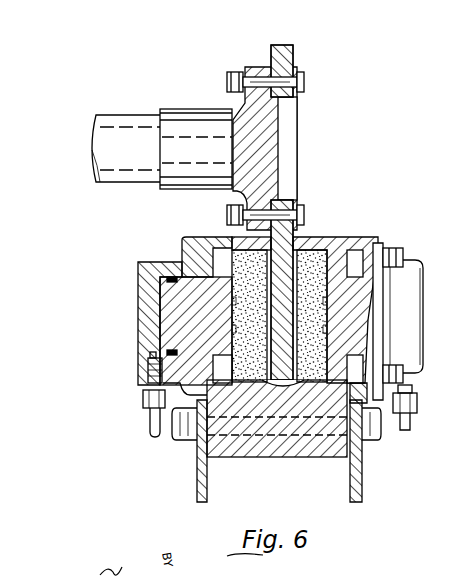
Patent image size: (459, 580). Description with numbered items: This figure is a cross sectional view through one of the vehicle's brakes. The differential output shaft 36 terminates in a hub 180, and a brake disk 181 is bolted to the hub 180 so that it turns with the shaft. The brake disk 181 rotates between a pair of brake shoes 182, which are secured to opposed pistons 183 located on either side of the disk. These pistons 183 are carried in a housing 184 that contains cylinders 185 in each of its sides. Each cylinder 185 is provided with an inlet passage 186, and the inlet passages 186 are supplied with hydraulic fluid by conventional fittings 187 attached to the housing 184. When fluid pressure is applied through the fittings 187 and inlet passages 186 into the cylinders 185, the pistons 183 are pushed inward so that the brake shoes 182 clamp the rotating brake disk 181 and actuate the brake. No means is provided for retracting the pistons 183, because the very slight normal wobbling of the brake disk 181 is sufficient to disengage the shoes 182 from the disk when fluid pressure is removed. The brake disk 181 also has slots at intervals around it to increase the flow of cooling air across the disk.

The differential output shaft 36 is at (144, 113).
The hub 180 is at (198, 120).
The brake disk 181 is at (296, 62).
The brake shoes 182 is at (262, 262).
The pistons 183 is at (181, 240).
The housing 184 is at (147, 262).
The cylinders 185 is at (167, 278).
The inlet passage 186 is at (150, 355).
The fittings 187 is at (146, 390).